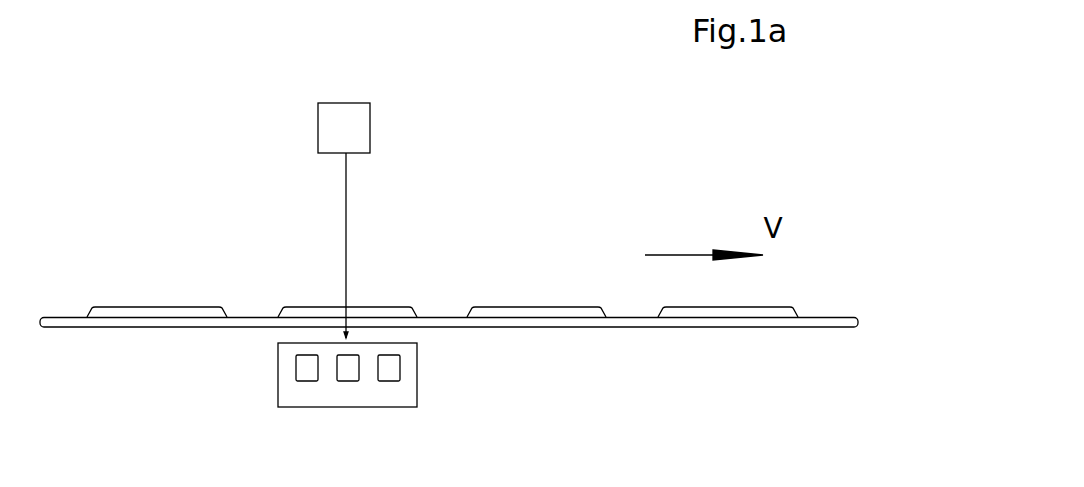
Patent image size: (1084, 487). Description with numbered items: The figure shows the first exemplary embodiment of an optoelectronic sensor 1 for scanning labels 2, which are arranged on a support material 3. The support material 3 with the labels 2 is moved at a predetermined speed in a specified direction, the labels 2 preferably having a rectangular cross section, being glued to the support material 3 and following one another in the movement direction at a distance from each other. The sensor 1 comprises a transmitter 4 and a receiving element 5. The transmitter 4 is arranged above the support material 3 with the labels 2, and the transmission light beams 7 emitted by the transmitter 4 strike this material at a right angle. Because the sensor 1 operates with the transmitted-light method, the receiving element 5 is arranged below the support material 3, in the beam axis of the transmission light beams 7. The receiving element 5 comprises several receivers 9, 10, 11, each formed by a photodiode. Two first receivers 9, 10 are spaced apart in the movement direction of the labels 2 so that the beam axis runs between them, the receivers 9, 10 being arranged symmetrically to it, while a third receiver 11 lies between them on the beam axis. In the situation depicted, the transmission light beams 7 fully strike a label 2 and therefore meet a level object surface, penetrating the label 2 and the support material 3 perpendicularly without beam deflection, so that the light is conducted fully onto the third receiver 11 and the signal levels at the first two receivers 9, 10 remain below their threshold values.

The optoelectronic sensor 1 is at (341, 275).
The labels 2 is at (520, 313).
The support material 3 is at (552, 326).
The transmitter 4 is at (352, 133).
The receiving element 5 is at (380, 405).
The transmission light beams 7 is at (347, 247).
The first receiver 9 is at (307, 378).
The first receiver 10 is at (389, 378).
The third receiver 11 is at (348, 378).